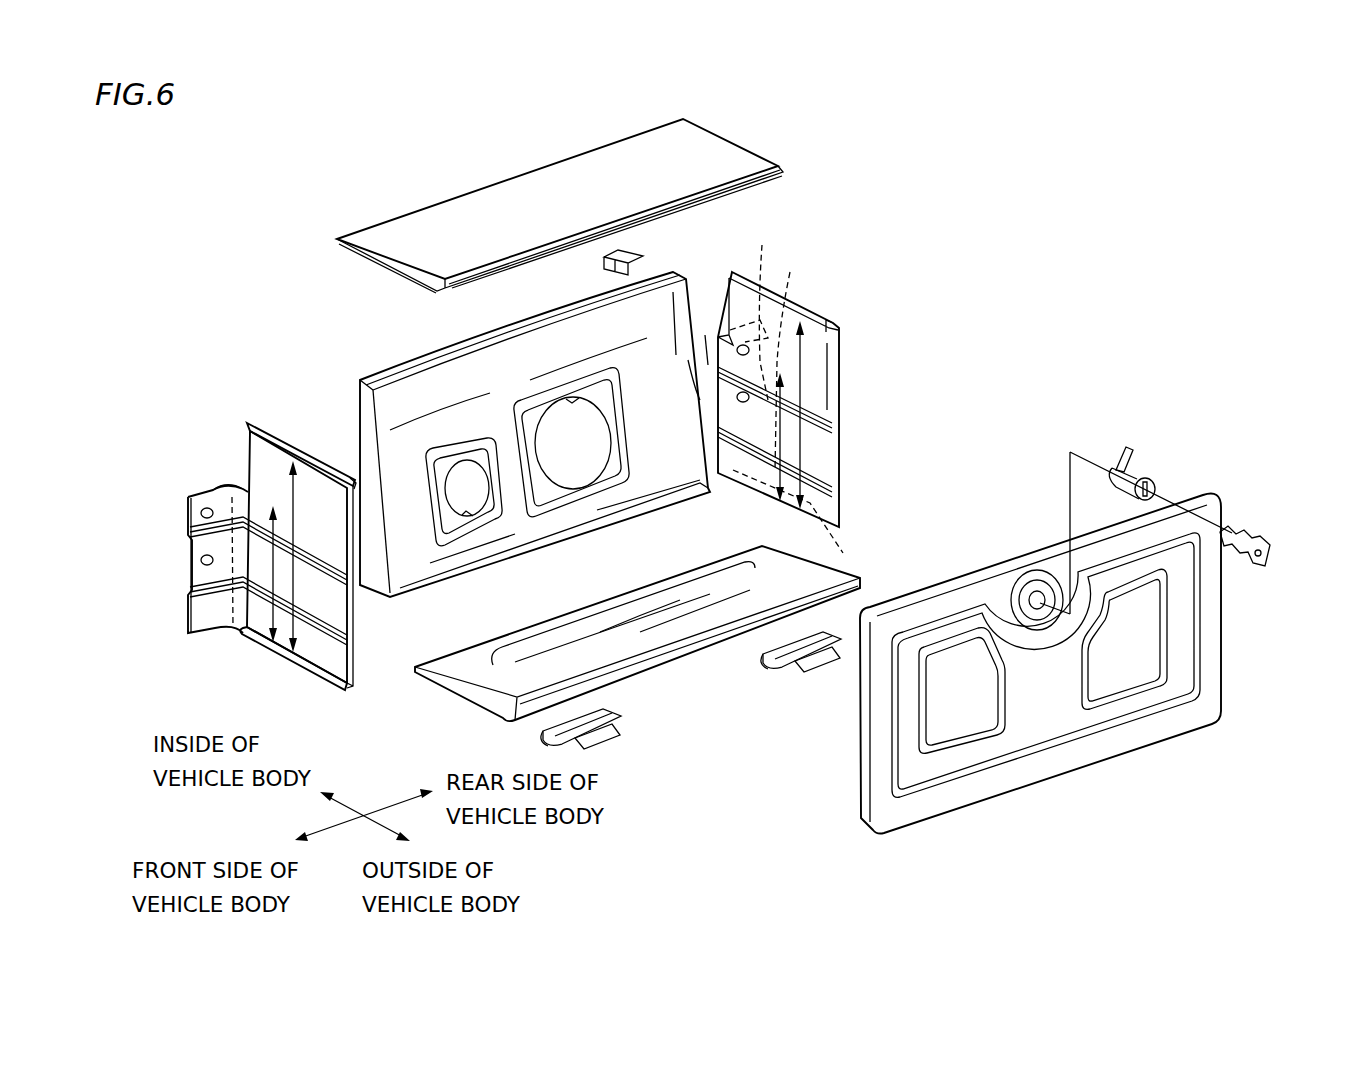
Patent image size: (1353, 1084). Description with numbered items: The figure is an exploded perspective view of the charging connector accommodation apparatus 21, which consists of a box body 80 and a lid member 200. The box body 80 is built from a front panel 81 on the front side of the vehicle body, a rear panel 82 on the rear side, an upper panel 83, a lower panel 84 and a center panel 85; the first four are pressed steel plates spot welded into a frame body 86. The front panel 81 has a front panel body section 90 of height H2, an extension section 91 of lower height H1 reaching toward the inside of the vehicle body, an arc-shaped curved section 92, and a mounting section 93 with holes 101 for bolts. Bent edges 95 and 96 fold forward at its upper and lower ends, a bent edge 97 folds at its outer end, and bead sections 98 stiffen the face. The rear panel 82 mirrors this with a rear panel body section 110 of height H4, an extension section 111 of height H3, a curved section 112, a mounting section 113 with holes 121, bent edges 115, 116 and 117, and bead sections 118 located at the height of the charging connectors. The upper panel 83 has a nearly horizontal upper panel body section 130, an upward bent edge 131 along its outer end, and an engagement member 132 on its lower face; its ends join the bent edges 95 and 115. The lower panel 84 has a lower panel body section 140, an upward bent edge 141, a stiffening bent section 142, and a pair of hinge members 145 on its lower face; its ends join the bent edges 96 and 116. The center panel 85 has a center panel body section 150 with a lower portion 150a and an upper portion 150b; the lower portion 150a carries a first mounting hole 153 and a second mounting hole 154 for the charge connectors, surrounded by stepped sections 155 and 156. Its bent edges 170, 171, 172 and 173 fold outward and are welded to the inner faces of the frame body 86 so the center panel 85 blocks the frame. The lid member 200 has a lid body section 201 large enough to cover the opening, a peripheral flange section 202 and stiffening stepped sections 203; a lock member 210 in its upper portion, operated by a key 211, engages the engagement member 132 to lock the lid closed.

The charging connector accommodation apparatus 21 is at (1057, 250).
The box body 80 is at (710, 486).
The front panel 81 is at (253, 554).
The rear panel 82 is at (796, 386).
The upper panel 83 is at (560, 206).
The lower panel 84 is at (622, 683).
The center panel 85 is at (526, 461).
The frame body 86 is at (541, 206).
The front panel body section 90 is at (287, 554).
The extension section 91 is at (244, 502).
The curved section 92 is at (228, 488).
The mounting section 93 is at (200, 498).
The bent edge 95 is at (278, 432).
The bent edge 96 is at (310, 672).
The bent edge 97 is at (358, 662).
The bead sections 98 is at (313, 560).
The holes 101 is at (202, 562).
The rear panel body section 110 is at (822, 503).
The extension section 111 is at (708, 345).
The curved section 112 is at (720, 310).
The mounting section 113 is at (763, 245).
The bent edge 115 is at (820, 313).
The bent edge 116 is at (838, 540).
The bent edge 117 is at (846, 472).
The bead sections 118 is at (823, 472).
The holes 121 is at (794, 360).
The upper panel body section 130 is at (530, 183).
The bent edge 131 is at (655, 212).
The engagement member 132 is at (627, 247).
The lower panel body section 140 is at (636, 641).
The bent edge 141 is at (710, 645).
The bent section 142 is at (660, 640).
The hinge members 145 is at (605, 740).
The center panel body section 150 is at (526, 461).
The lower portion 150a is at (680, 482).
The upper portion 150b is at (512, 365).
The first mounting hole 153 is at (574, 488).
The second mounting hole 154 is at (470, 520).
The stepped section 155 is at (608, 486).
The stepped section 156 is at (446, 545).
The bent edge 170 is at (437, 355).
The bent edge 171 is at (420, 598).
The bent edge 172 is at (365, 412).
The bent edge 173 is at (688, 400).
The lid member 200 is at (1012, 660).
The lid body section 201 is at (1040, 742).
The flange section 202 is at (860, 798).
The stepped sections 203 is at (1130, 695).
The lock member 210 is at (1148, 472).
The key 211 is at (1258, 540).
The height of extension section H1 is at (258, 622).
The height of front panel body section H2 is at (296, 522).
The height of extension section H3 is at (778, 498).
The height of rear panel body section H4 is at (802, 393).